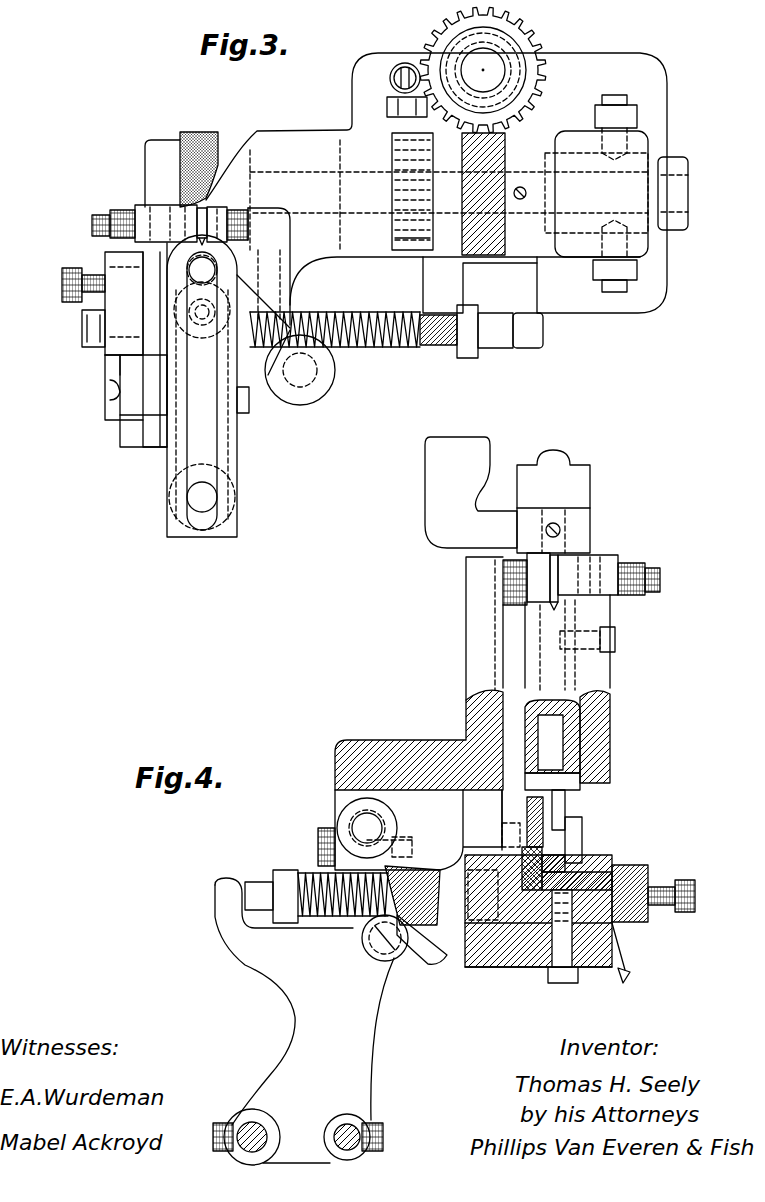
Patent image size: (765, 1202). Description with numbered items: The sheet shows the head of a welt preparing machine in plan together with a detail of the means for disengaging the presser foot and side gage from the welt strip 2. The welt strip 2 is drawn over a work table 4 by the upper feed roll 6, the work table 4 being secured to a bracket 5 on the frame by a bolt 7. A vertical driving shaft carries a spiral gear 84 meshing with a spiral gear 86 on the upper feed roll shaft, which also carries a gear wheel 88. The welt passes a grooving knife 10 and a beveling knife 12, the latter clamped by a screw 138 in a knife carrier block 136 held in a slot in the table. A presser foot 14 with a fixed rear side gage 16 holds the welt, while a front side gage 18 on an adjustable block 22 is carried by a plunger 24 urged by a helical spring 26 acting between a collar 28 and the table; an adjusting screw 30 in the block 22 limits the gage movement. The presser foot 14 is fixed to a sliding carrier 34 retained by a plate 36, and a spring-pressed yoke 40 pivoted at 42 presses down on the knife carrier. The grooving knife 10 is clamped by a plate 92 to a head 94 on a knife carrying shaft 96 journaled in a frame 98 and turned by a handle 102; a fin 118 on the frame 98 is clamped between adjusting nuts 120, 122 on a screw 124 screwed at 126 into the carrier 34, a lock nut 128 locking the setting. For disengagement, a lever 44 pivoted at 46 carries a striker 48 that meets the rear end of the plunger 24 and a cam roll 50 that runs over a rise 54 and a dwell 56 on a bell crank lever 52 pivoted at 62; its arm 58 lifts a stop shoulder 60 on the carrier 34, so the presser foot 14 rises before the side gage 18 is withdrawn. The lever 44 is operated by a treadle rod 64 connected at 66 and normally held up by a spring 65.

In FIG. 3, the welt strip 2 is at (206, 133).
In FIG. 4, the welt strip 2 is at (565, 866).
In FIG. 4, the work table 4 is at (618, 935).
In FIG. 4, the bracket 5 is at (526, 962).
In FIG. 3, the upper feed roll 6 is at (163, 148).
In FIG. 4, the bolt 7 is at (563, 983).
In FIG. 4, the grooving knife 10 is at (555, 858).
In FIG. 3, the beveling knife 12 is at (105, 372).
In FIG. 4, the presser foot 14 is at (582, 835).
In FIG. 4, the rear side gage 16 is at (530, 880).
In FIG. 3, the front side gage 18 is at (124, 402).
In FIG. 4, the front side gage 18 is at (612, 872).
In FIG. 3, the adjustable block 22 is at (107, 268).
In FIG. 4, the adjustable block 22 is at (650, 872).
In FIG. 3, the plunger 24 is at (85, 330).
In FIG. 4, the plunger 24 is at (237, 1003).
In FIG. 3, the helical spring 26 is at (352, 352).
In FIG. 4, the helical spring 26 is at (310, 920).
In FIG. 3, the collar 28 is at (468, 360).
In FIG. 4, the collar 28 is at (285, 878).
In FIG. 3, the adjusting screw 30 is at (62, 282).
In FIG. 4, the adjusting screw 30 is at (690, 910).
In FIG. 3, the sliding carrier 34 is at (247, 268).
In FIG. 4, the sliding carrier 34 is at (512, 711).
In FIG. 4, the plate 36 is at (610, 708).
In FIG. 3, the yoke 40 is at (180, 478).
In FIG. 4, the yoke 40 is at (560, 470).
In FIG. 3, the pivot 42 is at (246, 406).
In FIG. 4, the lever 44 is at (373, 1035).
In FIG. 4, the pivot 46 is at (252, 1130).
In FIG. 3, the striker 48 is at (545, 335).
In FIG. 4, the striker 48 is at (222, 888).
In FIG. 4, the cam roll 50 is at (378, 953).
In FIG. 4, the bell crank lever 52 is at (422, 823).
In FIG. 4, the rise 54 is at (405, 880).
In FIG. 4, the dwell 56 is at (425, 960).
In FIG. 4, the arm 58 is at (422, 823).
In FIG. 4, the stop shoulder 60 is at (507, 835).
In FIG. 4, the pivot 62 is at (358, 822).
In FIG. 3, the rod 64 is at (387, 103).
In FIG. 3, the spring 65 is at (391, 74).
In FIG. 3, the connection 66 is at (395, 140).
In FIG. 4, the connection 66 is at (347, 1128).
In FIG. 3, the spiral gear 84 is at (526, 38).
In FIG. 3, the spiral gear 86 is at (490, 165).
In FIG. 3, the gear wheel 88 is at (395, 240).
In FIG. 4, the plate 92 is at (565, 806).
In FIG. 4, the head 94 is at (580, 778).
In FIG. 4, the knife carrying shaft 96 is at (580, 730).
In FIG. 4, the frame 98 is at (565, 698).
In FIG. 3, the handle 102 is at (312, 398).
In FIG. 4, the handle 102 is at (447, 480).
In FIG. 3, the fin 118 is at (205, 208).
In FIG. 4, the fin 118 is at (556, 556).
In FIG. 3, the adjusting nut 120 is at (220, 210).
In FIG. 4, the adjusting nut 120 is at (535, 598).
In FIG. 3, the adjusting nut 122 is at (145, 206).
In FIG. 4, the adjusting nut 122 is at (600, 565).
In FIG. 3, the screw 124 is at (93, 222).
In FIG. 4, the screw 124 is at (660, 578).
In FIG. 3, the threaded connection 126 is at (250, 225).
In FIG. 4, the threaded connection 126 is at (503, 575).
In FIG. 3, the lock nut 128 is at (122, 212).
In FIG. 4, the lock nut 128 is at (632, 565).
In FIG. 3, the knife carrier block 136 is at (108, 360).
In FIG. 4, the knife carrier block 136 is at (628, 978).
In FIG. 3, the screw 138 is at (108, 392).